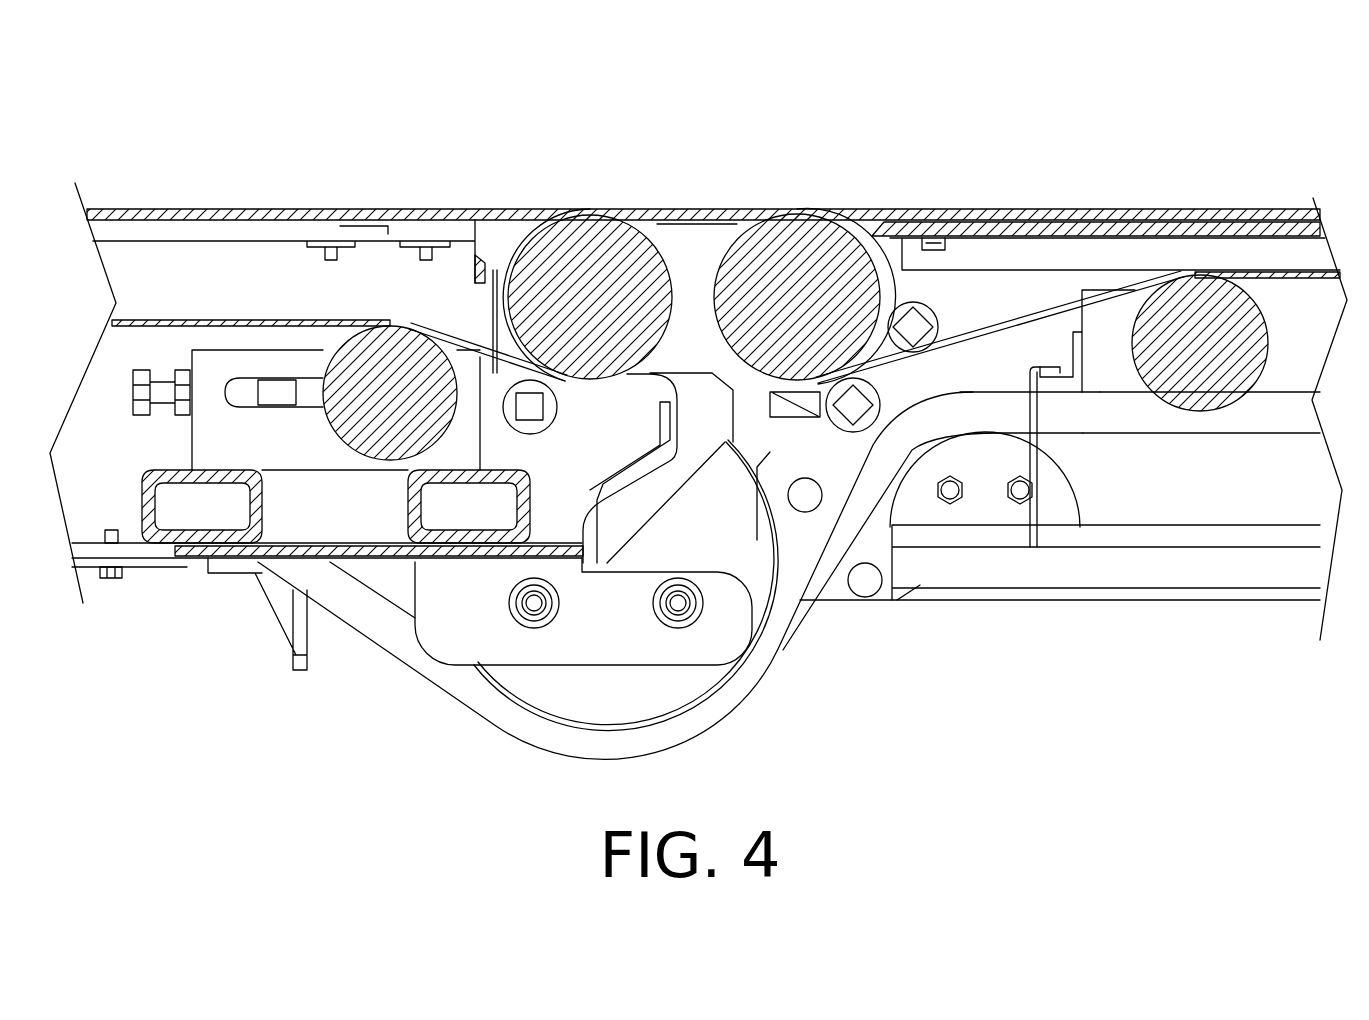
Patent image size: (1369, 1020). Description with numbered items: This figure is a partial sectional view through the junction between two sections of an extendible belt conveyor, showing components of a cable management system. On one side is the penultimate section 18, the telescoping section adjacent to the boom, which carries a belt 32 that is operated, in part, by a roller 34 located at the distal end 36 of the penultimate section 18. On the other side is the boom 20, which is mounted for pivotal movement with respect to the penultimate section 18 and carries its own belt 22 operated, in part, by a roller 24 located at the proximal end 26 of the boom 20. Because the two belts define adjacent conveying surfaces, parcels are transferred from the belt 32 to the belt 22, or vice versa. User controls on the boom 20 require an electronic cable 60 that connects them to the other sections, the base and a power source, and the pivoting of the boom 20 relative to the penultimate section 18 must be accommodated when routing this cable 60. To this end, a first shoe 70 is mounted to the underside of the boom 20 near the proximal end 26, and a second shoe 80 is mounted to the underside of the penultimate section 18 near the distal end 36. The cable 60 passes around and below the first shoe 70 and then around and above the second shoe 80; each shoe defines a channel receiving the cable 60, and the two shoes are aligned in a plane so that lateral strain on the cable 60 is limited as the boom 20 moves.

The penultimate section 18 is at (1140, 598).
The boom 20 is at (104, 582).
The belt 22 is at (262, 208).
The roller 24 is at (530, 237).
The proximal end 26 is at (628, 168).
The belt 32 is at (1120, 211).
The roller 34 is at (840, 237).
The distal end 36 is at (744, 168).
The electronic cable 60 is at (777, 627).
The first shoe 70 is at (565, 690).
The second shoe 80 is at (983, 488).